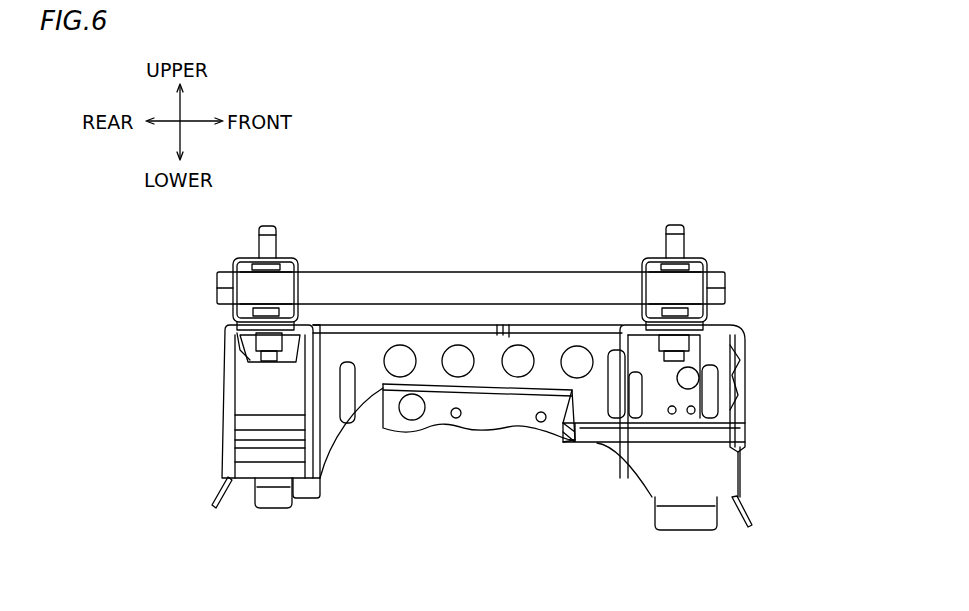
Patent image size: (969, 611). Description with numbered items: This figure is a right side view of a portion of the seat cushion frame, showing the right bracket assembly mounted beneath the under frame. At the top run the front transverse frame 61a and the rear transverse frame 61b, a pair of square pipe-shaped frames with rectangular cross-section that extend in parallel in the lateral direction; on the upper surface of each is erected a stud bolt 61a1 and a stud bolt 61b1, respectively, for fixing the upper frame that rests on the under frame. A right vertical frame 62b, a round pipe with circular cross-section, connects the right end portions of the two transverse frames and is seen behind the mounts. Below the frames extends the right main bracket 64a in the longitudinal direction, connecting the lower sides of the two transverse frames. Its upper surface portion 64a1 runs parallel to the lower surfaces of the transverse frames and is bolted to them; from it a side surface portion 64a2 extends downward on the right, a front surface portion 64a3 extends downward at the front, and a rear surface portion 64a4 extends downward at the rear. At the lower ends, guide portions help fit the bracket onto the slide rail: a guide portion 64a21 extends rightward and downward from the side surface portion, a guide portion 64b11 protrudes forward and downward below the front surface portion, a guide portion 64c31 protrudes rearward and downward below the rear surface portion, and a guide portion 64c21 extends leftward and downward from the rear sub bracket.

The front transverse frame 61a is at (707, 262).
The stud bolt 61a1 is at (674, 225).
The rear transverse frame 61b is at (233, 262).
The stud bolt 61b1 is at (268, 226).
The right vertical frame 62b is at (505, 272).
The right main bracket 64a is at (529, 354).
The upper surface portion 64a1 is at (428, 333).
The side surface portion 64a2 is at (421, 432).
The front surface portion 64a3 is at (748, 405).
The rear surface portion 64a4 is at (228, 380).
The guide portion 64a21 is at (684, 532).
The guide portion 64b11 is at (752, 519).
The guide portion 64c21 is at (272, 510).
The guide portion 64c31 is at (216, 490).